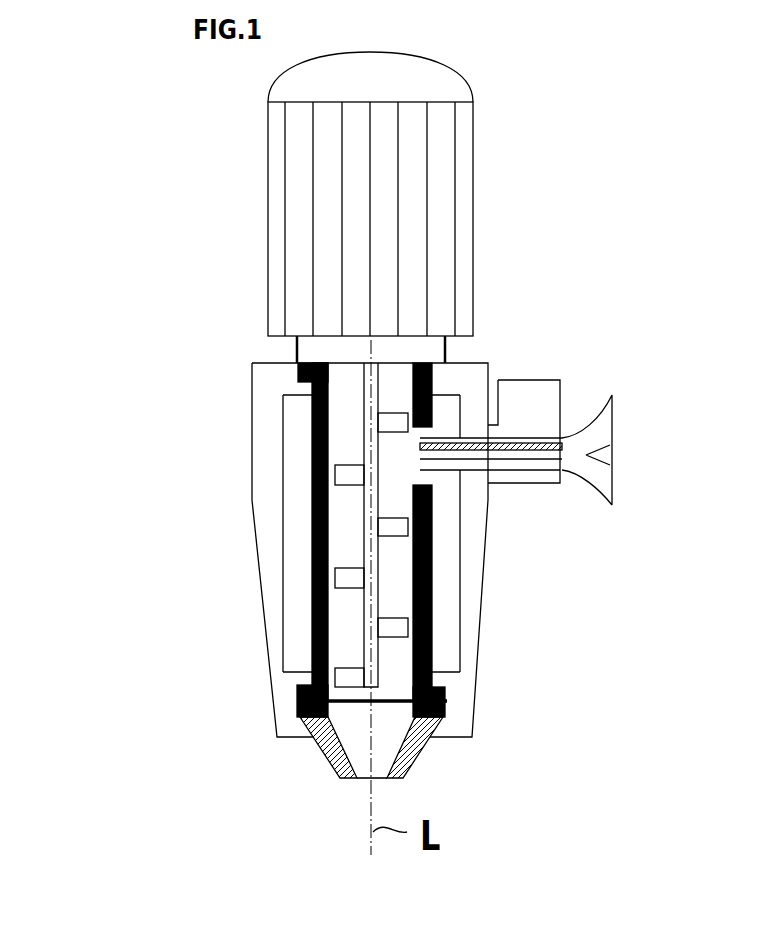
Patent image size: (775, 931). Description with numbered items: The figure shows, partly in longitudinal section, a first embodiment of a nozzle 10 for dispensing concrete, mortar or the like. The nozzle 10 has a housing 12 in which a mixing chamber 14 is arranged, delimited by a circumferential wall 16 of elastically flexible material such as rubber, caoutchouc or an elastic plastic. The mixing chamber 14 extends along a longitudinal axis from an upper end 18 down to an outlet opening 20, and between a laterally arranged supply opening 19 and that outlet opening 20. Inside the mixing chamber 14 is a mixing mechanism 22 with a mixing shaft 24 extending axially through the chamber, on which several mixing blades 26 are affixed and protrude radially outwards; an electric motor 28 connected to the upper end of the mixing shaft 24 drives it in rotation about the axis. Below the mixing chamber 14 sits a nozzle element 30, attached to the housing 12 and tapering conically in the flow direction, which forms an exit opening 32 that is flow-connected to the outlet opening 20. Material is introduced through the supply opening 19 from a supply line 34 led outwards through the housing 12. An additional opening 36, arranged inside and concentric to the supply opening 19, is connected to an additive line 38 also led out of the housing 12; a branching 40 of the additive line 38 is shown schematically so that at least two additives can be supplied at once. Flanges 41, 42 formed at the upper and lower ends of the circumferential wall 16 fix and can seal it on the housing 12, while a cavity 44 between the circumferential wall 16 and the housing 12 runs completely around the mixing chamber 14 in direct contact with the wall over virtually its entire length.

The nozzle 10 is at (183, 267).
The housing 12 is at (267, 402).
The mixing chamber 14 is at (340, 510).
The circumferential wall 16 is at (312, 466).
The upper end 18 is at (343, 370).
The supply opening 19 is at (420, 472).
The outlet opening 20 is at (393, 695).
The mixing mechanism 22 is at (433, 567).
The mixing shaft 24 is at (372, 593).
The mixing blades 26 is at (368, 578).
The electric motor 28 is at (417, 203).
The nozzle element 30 is at (340, 750).
The exit opening 32 is at (383, 780).
The supply line 34 is at (530, 398).
The additional opening 36 is at (562, 452).
The additive line 38 is at (583, 437).
The branching 40 is at (615, 456).
The flange 41 is at (432, 386).
The flange 42 is at (307, 685).
The cavity 44 is at (447, 620).